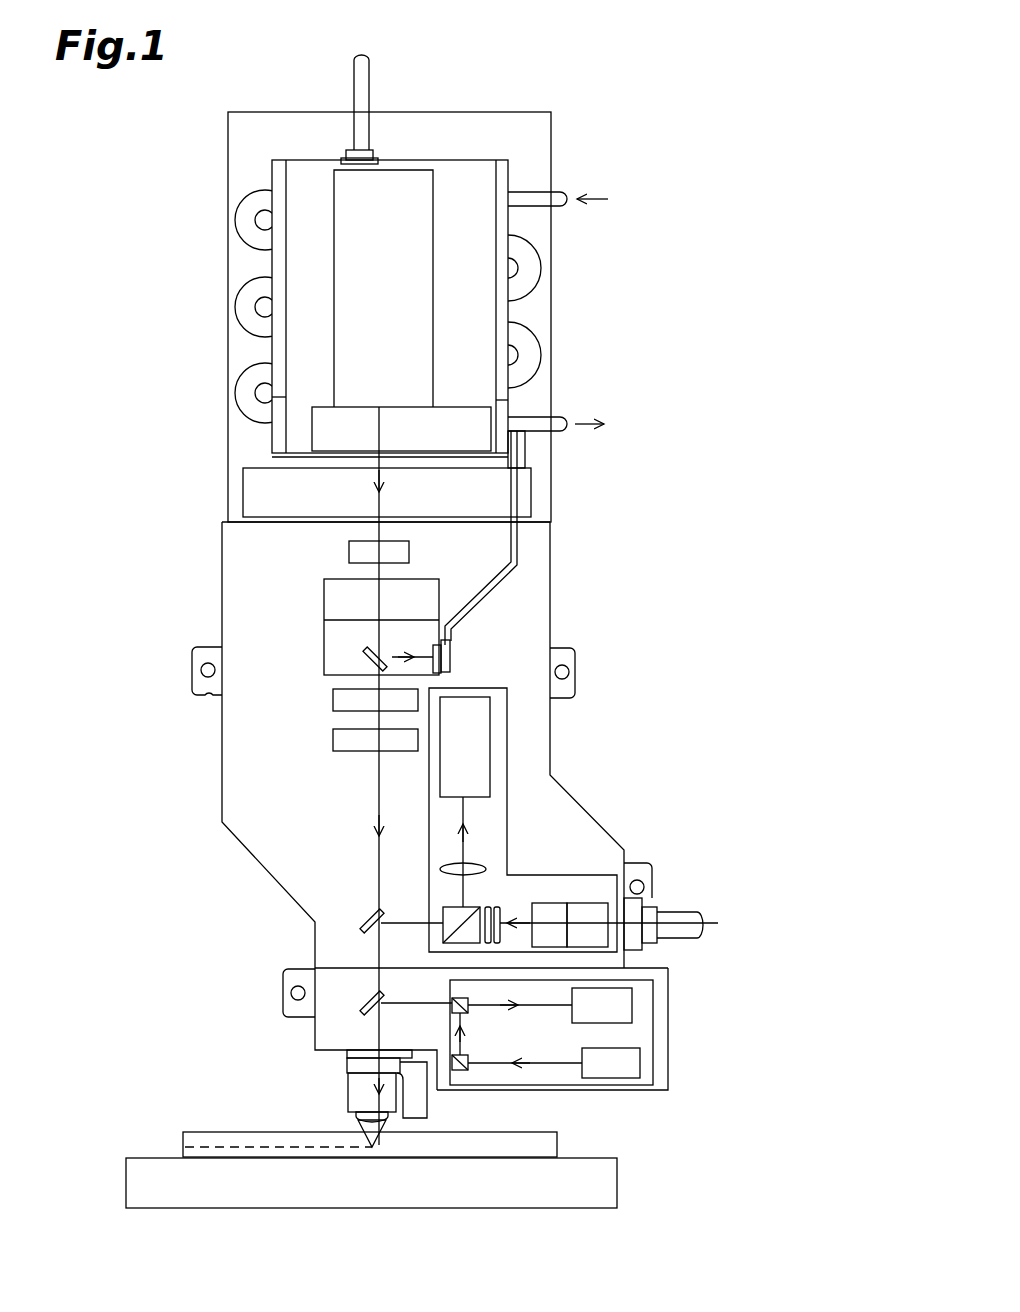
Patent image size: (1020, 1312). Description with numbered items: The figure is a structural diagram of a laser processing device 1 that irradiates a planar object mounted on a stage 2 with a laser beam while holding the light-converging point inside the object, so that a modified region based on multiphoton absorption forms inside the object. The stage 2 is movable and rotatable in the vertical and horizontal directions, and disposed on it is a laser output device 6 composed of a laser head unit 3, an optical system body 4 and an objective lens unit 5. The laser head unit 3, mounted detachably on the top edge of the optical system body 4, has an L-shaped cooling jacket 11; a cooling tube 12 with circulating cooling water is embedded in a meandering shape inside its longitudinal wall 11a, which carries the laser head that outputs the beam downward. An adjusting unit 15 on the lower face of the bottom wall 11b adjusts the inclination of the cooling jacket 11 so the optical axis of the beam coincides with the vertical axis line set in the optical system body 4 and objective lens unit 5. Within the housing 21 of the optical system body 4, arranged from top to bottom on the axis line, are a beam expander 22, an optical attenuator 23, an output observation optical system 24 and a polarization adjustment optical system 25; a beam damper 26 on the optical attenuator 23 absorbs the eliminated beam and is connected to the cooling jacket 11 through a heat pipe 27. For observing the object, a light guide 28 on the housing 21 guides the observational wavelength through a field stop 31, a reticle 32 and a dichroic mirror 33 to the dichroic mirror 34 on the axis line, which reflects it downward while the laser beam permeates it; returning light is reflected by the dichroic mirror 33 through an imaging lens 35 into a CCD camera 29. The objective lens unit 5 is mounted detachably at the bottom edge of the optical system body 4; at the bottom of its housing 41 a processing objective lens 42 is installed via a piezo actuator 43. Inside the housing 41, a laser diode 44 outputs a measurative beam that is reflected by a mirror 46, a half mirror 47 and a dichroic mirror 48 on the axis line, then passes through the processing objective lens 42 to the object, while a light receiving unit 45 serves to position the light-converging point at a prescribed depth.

The laser processing device 1 is at (582, 72).
The stage 2 is at (126, 1188).
The laser head unit 3 is at (551, 338).
The optical system body 4 is at (550, 628).
The objective lens unit 5 is at (593, 1052).
The laser output device 6 is at (421, 789).
The cooling jacket 11 is at (272, 178).
The longitudinal wall 11a is at (464, 172).
The bottom wall 11b is at (268, 460).
The cooling tube 12 is at (243, 393).
The adjusting unit 15 is at (252, 497).
The housing 21 is at (222, 795).
The beam expander 22 is at (349, 552).
The optical attenuator 23 is at (324, 648).
The output observation optical system 24 is at (333, 700).
The polarization adjustment optical system 25 is at (333, 742).
The beam damper 26 is at (452, 656).
The heat pipe 27 is at (518, 546).
The light guide 28 is at (680, 912).
The CCD camera 29 is at (490, 748).
The field stop 31 is at (588, 903).
The reticle 32 is at (550, 903).
The dichroic mirror 33 is at (470, 905).
The dichroic mirror 34 is at (365, 915).
The imaging lens 35 is at (455, 865).
The housing 41 is at (313, 1032).
The processing objective lens 42 is at (350, 1088).
The actuator 43 is at (428, 1106).
The laser diode 44 is at (640, 1063).
The light receiving unit 45 is at (632, 1003).
The mirror 46 is at (470, 1066).
The half mirror 47 is at (470, 1012).
The dichroic mirror 48 is at (368, 998).